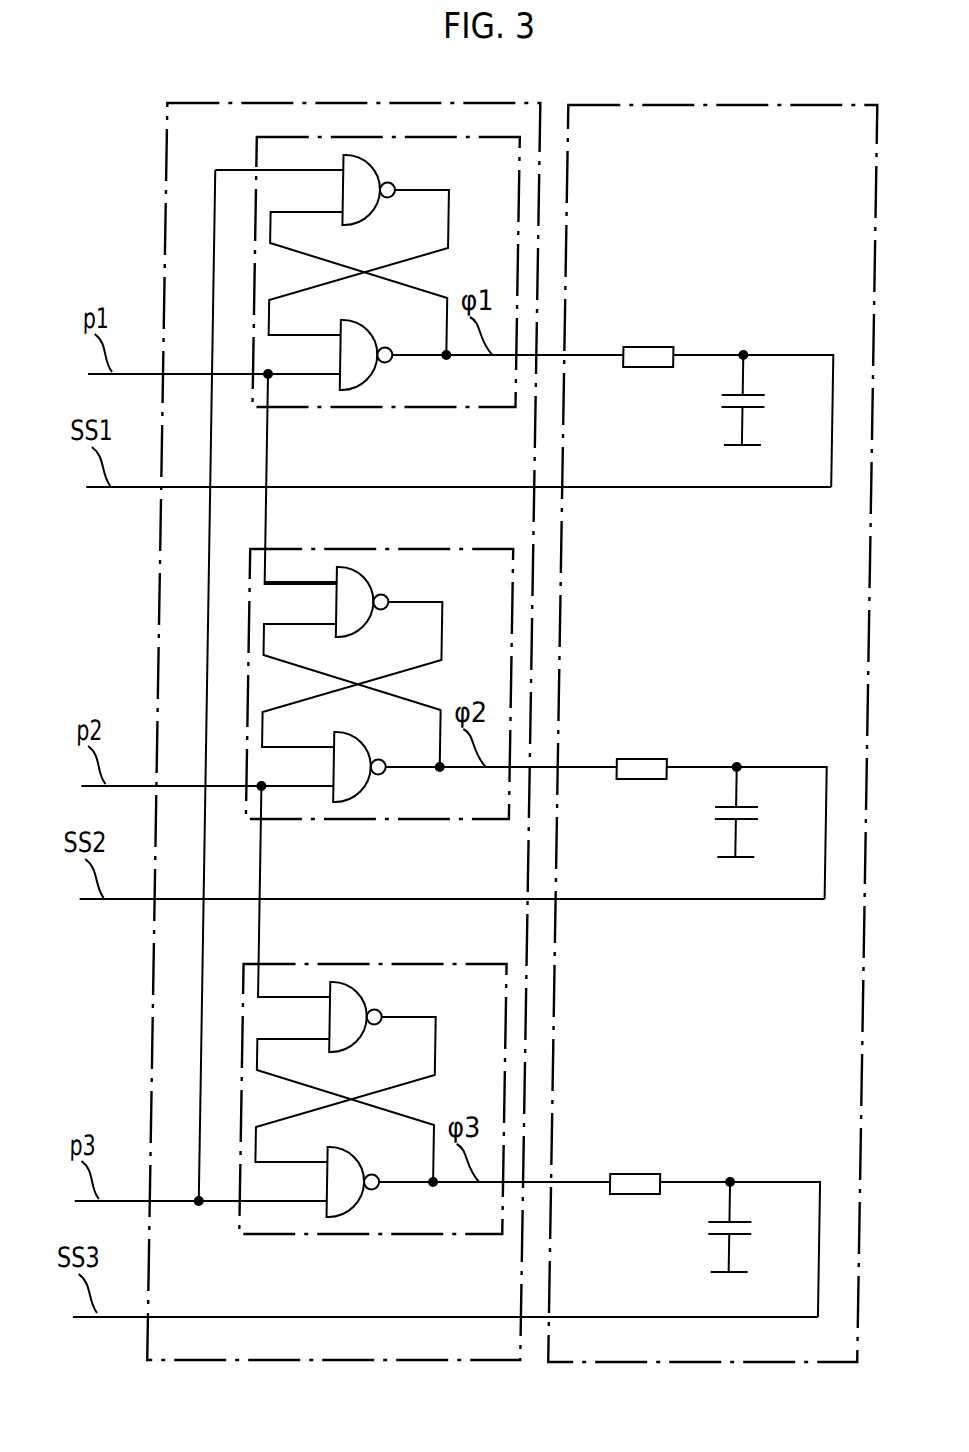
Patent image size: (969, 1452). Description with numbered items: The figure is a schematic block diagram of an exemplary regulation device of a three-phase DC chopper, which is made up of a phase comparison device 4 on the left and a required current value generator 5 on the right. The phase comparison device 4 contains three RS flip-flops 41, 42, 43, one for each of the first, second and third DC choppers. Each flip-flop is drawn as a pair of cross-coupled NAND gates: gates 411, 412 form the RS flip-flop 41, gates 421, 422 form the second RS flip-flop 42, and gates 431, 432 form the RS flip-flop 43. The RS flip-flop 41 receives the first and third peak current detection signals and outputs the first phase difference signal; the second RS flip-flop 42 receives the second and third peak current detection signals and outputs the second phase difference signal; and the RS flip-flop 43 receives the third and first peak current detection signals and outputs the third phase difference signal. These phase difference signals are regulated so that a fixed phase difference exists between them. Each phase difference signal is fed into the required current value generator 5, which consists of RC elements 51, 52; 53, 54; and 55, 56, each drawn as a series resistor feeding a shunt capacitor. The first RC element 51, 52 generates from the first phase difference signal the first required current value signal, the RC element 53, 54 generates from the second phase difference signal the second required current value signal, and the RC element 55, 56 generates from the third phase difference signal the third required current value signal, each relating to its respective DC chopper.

The phase comparison device 4 is at (184, 151).
The required current value generator 5 is at (589, 152).
The RS flip-flop 41 is at (483, 183).
The second RS flip-flop 42 is at (379, 684).
The RS flip-flop 43 is at (372, 1099).
The NAND gate 411 is at (358, 208).
The NAND gate 412 is at (362, 340).
The NAND gate 421 is at (383, 615).
The NAND gate 422 is at (380, 756).
The NAND gate 431 is at (377, 1030).
The NAND gate 432 is at (374, 1171).
The RC element 51 is at (654, 347).
The RC element 52 is at (733, 407).
The RC element 53 is at (645, 733).
The RC element 54 is at (720, 831).
The RC element 55 is at (638, 1148).
The RC element 56 is at (714, 1246).